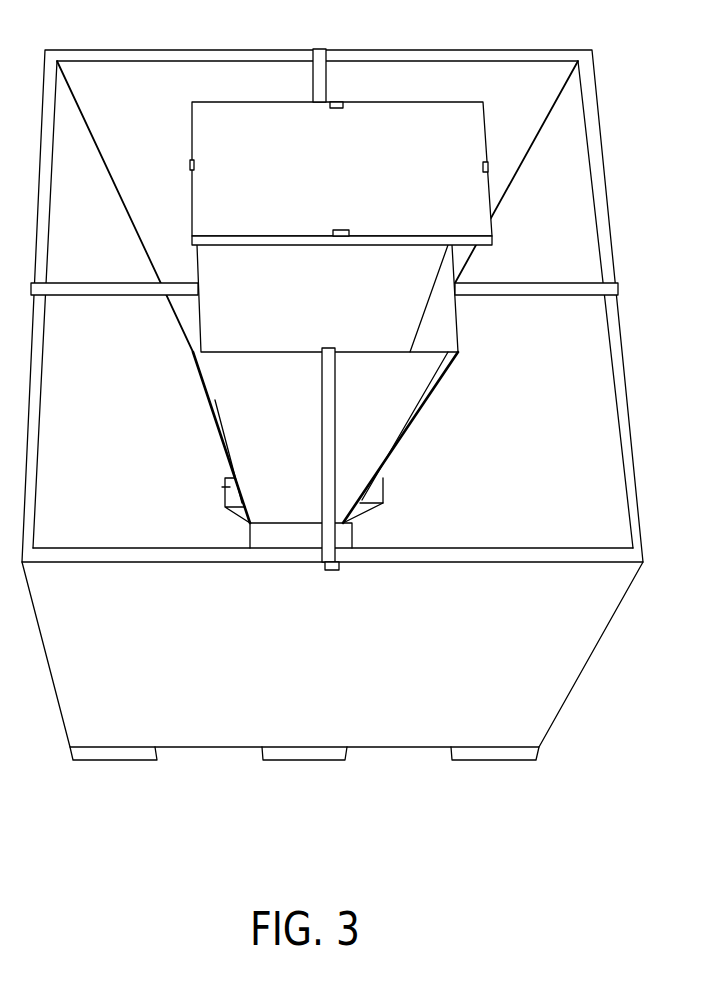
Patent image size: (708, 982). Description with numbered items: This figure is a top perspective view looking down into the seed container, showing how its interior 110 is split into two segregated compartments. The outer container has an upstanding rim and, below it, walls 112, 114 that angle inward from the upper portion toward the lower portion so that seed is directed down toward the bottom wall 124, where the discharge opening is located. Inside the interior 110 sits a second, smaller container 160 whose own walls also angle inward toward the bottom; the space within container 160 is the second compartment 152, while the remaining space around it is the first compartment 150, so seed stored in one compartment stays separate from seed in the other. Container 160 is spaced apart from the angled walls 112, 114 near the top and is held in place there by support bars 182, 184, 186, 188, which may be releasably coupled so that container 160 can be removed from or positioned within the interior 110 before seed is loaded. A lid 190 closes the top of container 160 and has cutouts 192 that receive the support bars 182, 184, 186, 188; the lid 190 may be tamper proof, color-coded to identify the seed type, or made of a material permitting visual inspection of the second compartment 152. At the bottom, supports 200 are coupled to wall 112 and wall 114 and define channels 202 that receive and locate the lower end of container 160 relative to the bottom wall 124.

The interior 110 is at (562, 187).
The wall 112 is at (107, 489).
The wall 114 is at (535, 490).
The bottom wall 124 is at (277, 528).
The first compartment 150 is at (573, 352).
The second compartment 152 is at (430, 330).
The container 160 is at (448, 397).
The support bar 182 is at (70, 289).
The support bar 184 is at (619, 287).
The support bar 186 is at (332, 532).
The support bar 188 is at (320, 47).
The lid 190 is at (459, 93).
The cutouts 192 is at (337, 93).
The supports 200 is at (212, 503).
The channels 202 is at (222, 487).